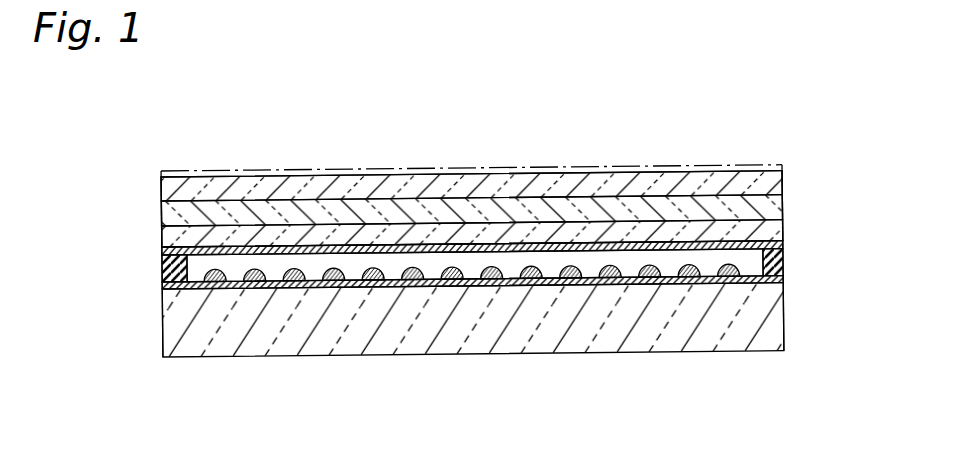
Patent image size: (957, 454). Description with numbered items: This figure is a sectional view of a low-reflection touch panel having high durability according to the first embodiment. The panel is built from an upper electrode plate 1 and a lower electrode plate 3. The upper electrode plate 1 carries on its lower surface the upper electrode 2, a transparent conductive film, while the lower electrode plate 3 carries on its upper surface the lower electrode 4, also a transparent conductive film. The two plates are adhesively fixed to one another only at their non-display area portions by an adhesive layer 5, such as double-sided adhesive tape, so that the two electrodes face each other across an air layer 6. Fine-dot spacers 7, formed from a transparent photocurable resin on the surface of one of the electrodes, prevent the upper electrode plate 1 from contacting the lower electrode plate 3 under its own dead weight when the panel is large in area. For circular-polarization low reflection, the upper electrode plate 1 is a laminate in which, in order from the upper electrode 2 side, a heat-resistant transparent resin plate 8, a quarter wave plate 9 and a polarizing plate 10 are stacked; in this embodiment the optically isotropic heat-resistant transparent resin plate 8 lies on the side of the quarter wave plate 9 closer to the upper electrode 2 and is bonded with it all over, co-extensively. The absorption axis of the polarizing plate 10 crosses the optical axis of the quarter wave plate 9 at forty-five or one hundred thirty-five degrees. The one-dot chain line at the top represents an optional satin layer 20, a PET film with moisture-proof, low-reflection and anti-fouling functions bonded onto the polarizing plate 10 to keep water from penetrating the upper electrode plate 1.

The satin layer 20 is at (223, 168).
The upper electrode plate 1 is at (843, 142).
The polarizing plate 10 is at (783, 181).
The quarter wave plate 9 is at (783, 212).
The heat-resistant transparent resin plate 8 is at (783, 242).
The upper electrode 2 is at (482, 247).
The lower electrode 4 is at (313, 278).
The spacer 7 is at (650, 277).
The adhesive layer 5 is at (164, 280).
The air layer 6 is at (396, 262).
The lower electrode plate 3 is at (753, 322).